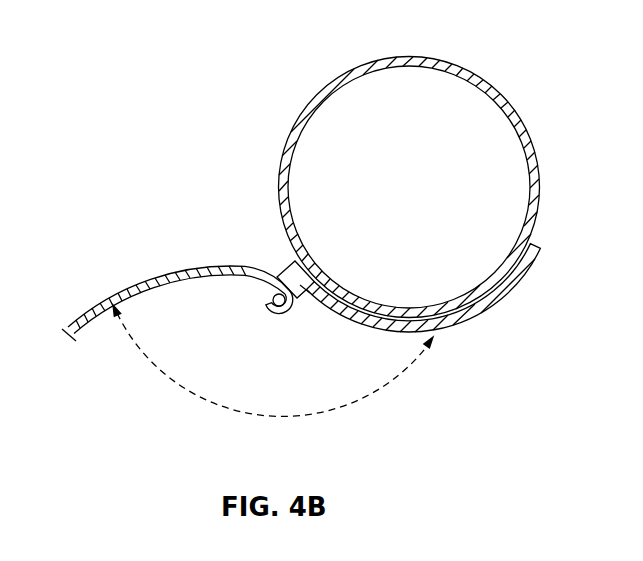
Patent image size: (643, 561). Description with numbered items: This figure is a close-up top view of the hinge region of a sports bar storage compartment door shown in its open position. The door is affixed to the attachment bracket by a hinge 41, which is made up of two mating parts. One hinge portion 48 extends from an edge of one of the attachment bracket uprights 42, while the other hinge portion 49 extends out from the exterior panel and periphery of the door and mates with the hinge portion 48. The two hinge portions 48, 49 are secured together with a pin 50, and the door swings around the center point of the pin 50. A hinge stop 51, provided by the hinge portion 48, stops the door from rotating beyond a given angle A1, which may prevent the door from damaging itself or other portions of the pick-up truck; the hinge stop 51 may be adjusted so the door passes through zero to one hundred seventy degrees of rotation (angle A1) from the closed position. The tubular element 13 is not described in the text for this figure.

The tubular frame member 13 is at (542, 176).
The upright 42 is at (481, 318).
The hinge stop 51 is at (293, 268).
The hinge portion 48 is at (313, 293).
The hinge portion 49 is at (135, 283).
The pin 50 is at (282, 312).
The hinge 41 is at (253, 307).
The angle A1 is at (283, 419).